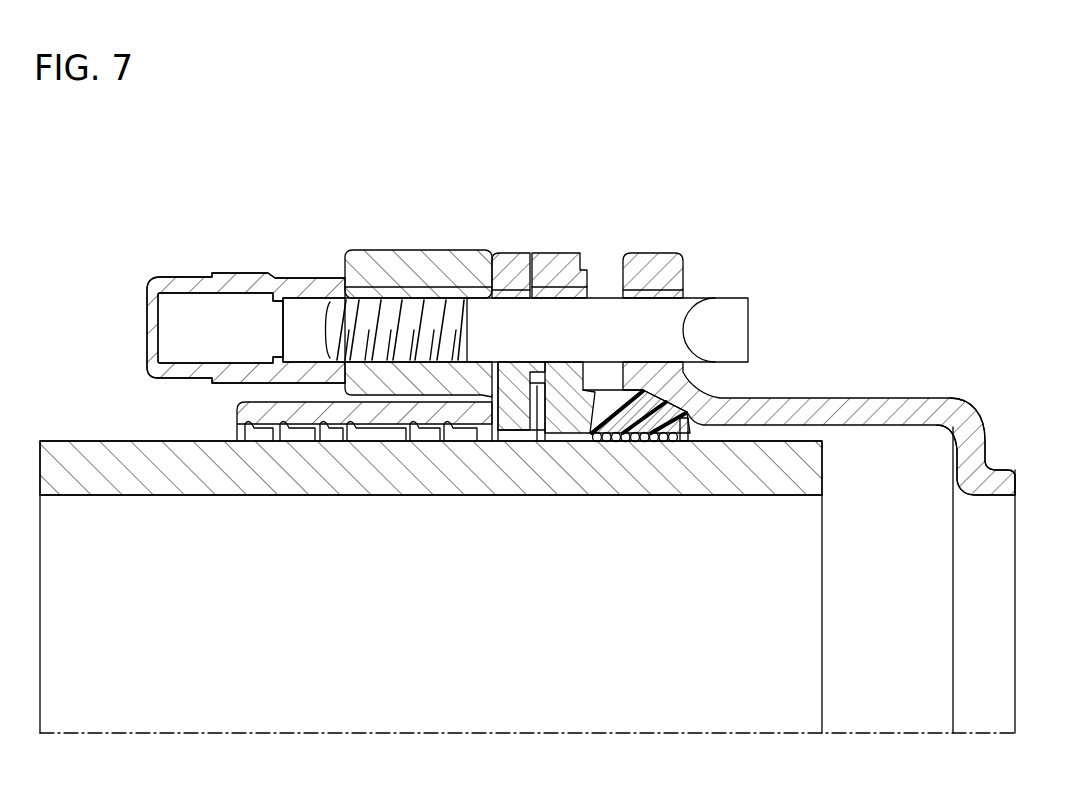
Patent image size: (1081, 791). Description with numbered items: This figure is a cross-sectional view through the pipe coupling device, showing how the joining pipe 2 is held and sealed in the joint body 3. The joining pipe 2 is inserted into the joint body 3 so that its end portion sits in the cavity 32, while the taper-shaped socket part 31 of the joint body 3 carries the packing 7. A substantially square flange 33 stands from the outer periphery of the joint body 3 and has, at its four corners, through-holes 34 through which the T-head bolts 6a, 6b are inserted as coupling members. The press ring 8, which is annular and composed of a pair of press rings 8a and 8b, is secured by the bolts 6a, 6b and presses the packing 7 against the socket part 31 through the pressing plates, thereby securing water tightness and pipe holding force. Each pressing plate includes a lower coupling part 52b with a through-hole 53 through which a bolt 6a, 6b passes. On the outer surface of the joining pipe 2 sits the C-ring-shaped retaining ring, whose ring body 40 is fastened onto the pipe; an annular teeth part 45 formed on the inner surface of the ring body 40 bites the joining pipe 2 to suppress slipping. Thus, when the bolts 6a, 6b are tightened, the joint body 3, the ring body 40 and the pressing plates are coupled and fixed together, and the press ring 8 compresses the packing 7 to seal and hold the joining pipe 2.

The joining pipe 2 is at (822, 593).
The joint body 3 is at (888, 400).
The T-head bolt 6a is at (733, 324).
The T-head bolt 6b is at (150, 283).
The packing 7 is at (612, 440).
The press ring 8 is at (502, 166).
The press ring 8a is at (567, 257).
The press ring 8b is at (507, 257).
The socket part 31 is at (662, 437).
The cavity 32 is at (900, 437).
The flange 33 is at (653, 257).
The through-hole 34 is at (658, 299).
The ring body 40 is at (260, 405).
The annular teeth part 45 is at (312, 425).
The lower coupling part 52b is at (370, 250).
The through-hole 53 is at (404, 310).